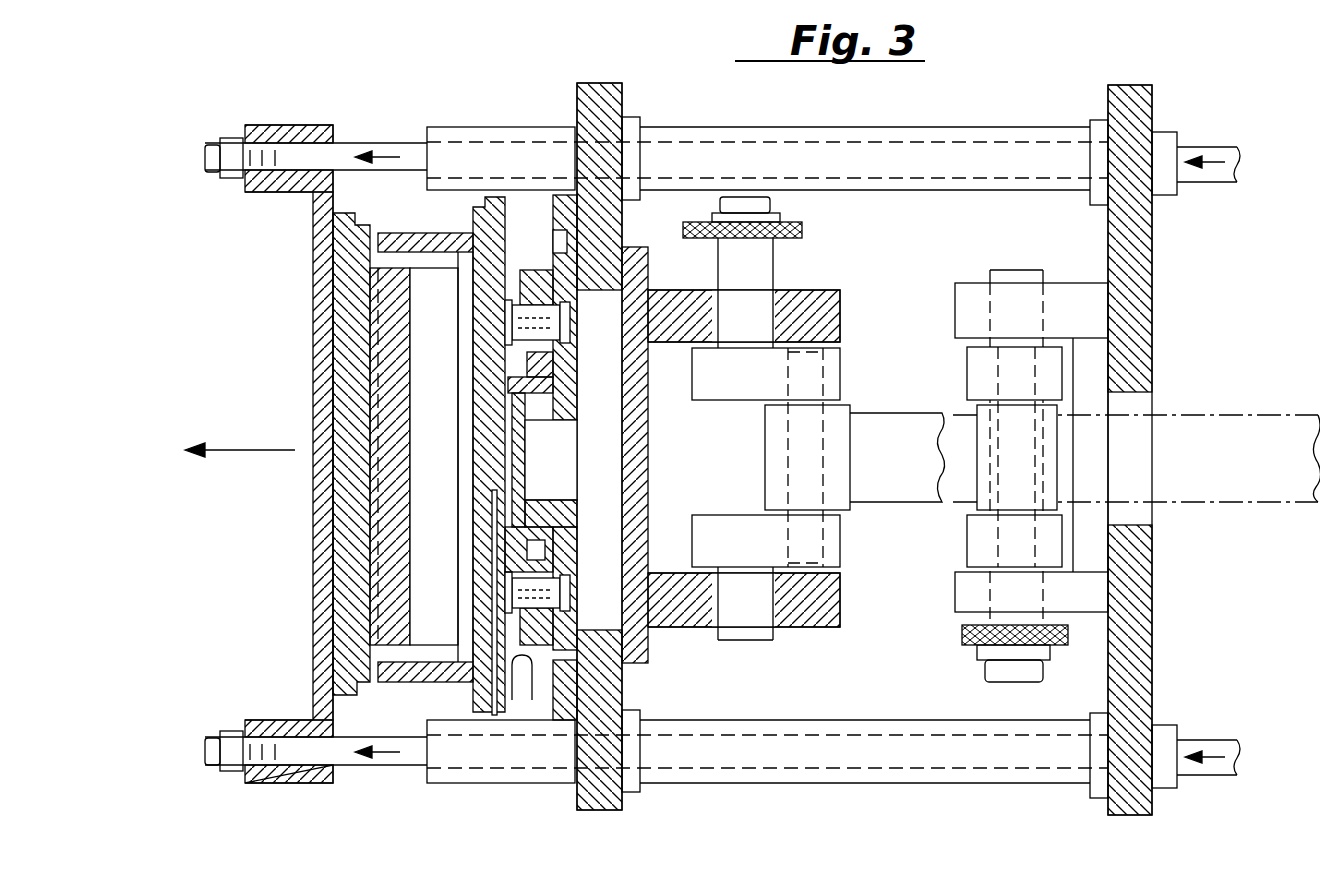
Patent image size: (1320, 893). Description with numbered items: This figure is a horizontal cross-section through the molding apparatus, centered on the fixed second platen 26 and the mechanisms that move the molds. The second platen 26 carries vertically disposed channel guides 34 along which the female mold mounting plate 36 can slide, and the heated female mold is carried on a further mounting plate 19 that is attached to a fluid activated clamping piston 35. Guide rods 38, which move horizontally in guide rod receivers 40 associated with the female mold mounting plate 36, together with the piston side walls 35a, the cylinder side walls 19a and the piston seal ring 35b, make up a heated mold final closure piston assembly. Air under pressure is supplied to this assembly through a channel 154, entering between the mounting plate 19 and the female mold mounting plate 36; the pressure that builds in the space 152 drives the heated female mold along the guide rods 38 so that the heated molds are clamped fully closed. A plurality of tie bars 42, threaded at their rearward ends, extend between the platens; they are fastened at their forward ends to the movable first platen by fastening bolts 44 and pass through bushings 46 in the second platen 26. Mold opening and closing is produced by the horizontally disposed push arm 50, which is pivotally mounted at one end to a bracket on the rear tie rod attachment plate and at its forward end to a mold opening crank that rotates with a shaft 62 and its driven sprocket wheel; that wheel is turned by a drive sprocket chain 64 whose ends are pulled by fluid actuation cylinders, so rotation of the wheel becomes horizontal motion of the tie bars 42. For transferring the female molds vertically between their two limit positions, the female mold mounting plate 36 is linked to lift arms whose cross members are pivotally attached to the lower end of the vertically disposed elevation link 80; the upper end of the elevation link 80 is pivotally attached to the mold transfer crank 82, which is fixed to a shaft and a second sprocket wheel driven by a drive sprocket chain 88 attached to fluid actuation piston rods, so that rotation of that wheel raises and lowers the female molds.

The mounting plate 19 is at (488, 198).
The cylinder side walls 19a is at (512, 385).
The fixed second platen 26 is at (607, 795).
The channel guides 34 is at (567, 705).
The fluid activated clamping piston 35 is at (522, 456).
The piston side walls 35a is at (520, 520).
The piston seal ring 35b is at (555, 516).
The female mold mounting plate 36 is at (540, 258).
The guide rods 38 is at (523, 300).
The guide rod receivers 40 is at (545, 358).
The tie bars 42 is at (357, 152).
The fastening bolts 44 is at (236, 138).
The bushings 46 is at (630, 128).
The horizontally disposed push arm 50 is at (888, 420).
The shaft 62 is at (760, 262).
The drive sprocket chain 64 is at (802, 232).
The elevation link 80 is at (1048, 455).
The mold transfer crank 82 is at (968, 365).
The drive sprocket chain 88 is at (962, 635).
The space 152 is at (513, 445).
The channel 154 is at (490, 678).